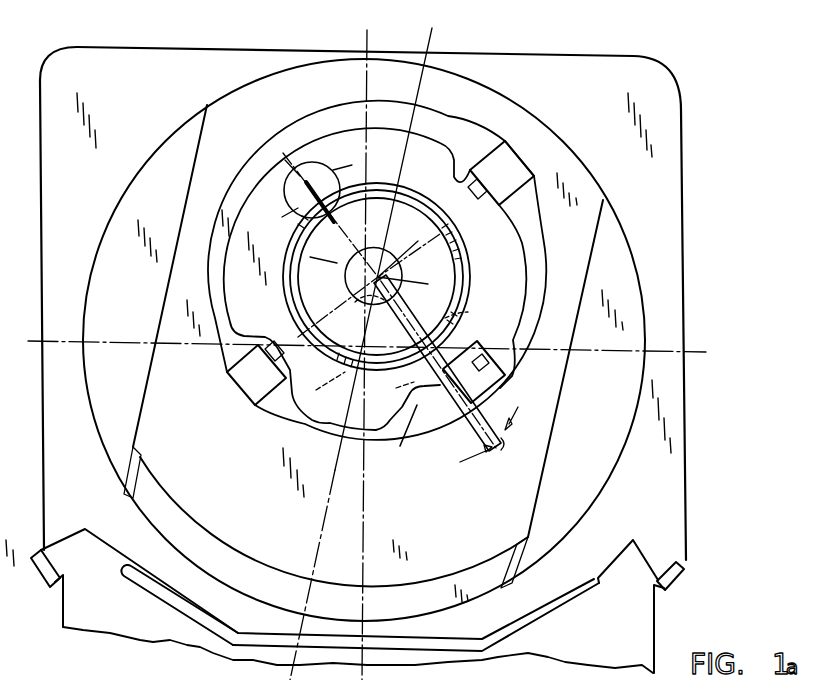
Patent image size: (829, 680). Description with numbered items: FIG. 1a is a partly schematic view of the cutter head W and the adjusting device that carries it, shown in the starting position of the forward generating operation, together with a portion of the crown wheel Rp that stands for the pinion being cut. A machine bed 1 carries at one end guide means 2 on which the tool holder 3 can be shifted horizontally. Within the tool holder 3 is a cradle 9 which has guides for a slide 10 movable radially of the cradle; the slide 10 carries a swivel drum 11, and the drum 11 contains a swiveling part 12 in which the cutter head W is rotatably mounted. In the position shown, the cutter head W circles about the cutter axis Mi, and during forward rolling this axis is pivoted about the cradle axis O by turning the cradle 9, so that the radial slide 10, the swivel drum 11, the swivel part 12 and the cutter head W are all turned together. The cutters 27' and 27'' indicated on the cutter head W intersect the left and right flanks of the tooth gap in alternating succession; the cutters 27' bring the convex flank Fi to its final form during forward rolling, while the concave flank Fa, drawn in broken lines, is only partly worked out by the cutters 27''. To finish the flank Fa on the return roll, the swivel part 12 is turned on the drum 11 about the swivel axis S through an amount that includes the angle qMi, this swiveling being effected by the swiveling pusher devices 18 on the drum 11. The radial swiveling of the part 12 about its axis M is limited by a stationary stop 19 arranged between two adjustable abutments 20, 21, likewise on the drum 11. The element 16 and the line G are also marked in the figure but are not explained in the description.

The machine bed 1 is at (72, 600).
The guide means 2 is at (652, 556).
The tool holder 3 is at (604, 64).
The cradle 9 is at (157, 162).
The radial slide 10 is at (233, 95).
The swivel drum 11 is at (514, 116).
The swivel part 12 is at (428, 133).
The window / opening 16 is at (284, 189).
The swiveling pusher devices 18 is at (514, 158).
The stationary stop 19 is at (503, 396).
The adjustable abutment 20 is at (505, 372).
The adjustable abutment 21 is at (414, 436).
The cutters 27' is at (400, 276).
The cutters 27'' is at (399, 276).
The cutter head W is at (470, 286).
The cutter head axis M is at (381, 263).
The cutter axis Mi is at (335, 294).
The convex flank Fi is at (438, 284).
The concave flank Fa is at (470, 312).
The cradle axis O is at (323, 388).
The crown wheel Rp is at (393, 391).
The swivel angle qMi is at (489, 475).
The line G is at (445, 30).
The swivel axis S is at (318, 172).